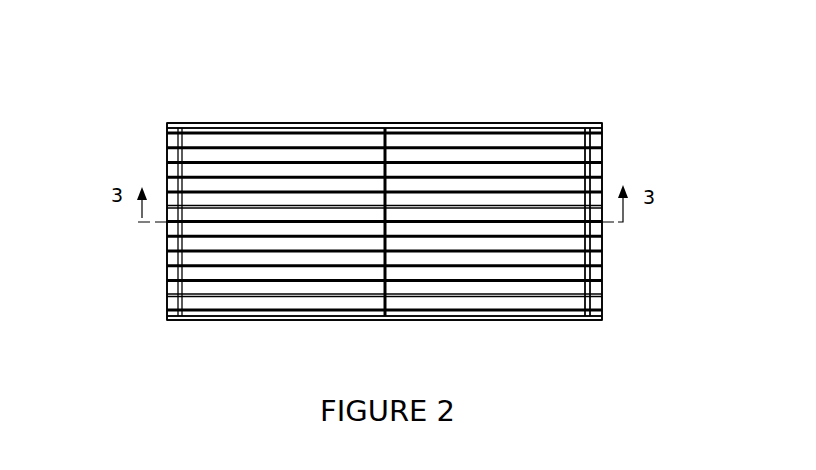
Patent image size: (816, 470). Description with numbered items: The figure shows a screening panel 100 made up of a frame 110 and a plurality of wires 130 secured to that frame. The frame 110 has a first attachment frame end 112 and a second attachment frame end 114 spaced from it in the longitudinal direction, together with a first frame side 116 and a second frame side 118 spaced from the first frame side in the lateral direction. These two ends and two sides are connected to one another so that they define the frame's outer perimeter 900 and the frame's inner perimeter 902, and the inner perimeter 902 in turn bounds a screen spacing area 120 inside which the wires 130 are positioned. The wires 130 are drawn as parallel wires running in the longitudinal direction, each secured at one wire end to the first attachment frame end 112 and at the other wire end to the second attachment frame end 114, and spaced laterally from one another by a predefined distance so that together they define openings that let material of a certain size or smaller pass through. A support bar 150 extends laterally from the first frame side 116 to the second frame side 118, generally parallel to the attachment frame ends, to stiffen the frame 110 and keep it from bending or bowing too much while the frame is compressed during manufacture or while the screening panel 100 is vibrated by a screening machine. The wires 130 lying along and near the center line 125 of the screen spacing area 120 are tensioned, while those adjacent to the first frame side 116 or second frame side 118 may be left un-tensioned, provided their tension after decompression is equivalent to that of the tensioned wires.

The screening panel 100 is at (137, 58).
The frame 110 is at (158, 123).
The first attachment frame end 112 is at (597, 283).
The second attachment frame end 114 is at (173, 258).
The first frame side 116 is at (452, 123).
The second frame side 118 is at (260, 317).
The screen spacing area 120 is at (250, 133).
The center line 125 is at (153, 222).
The wires 130 is at (480, 267).
The support bar 150 is at (383, 167).
The outer perimeter 900 is at (375, 123).
The inner perimeter 902 is at (593, 133).